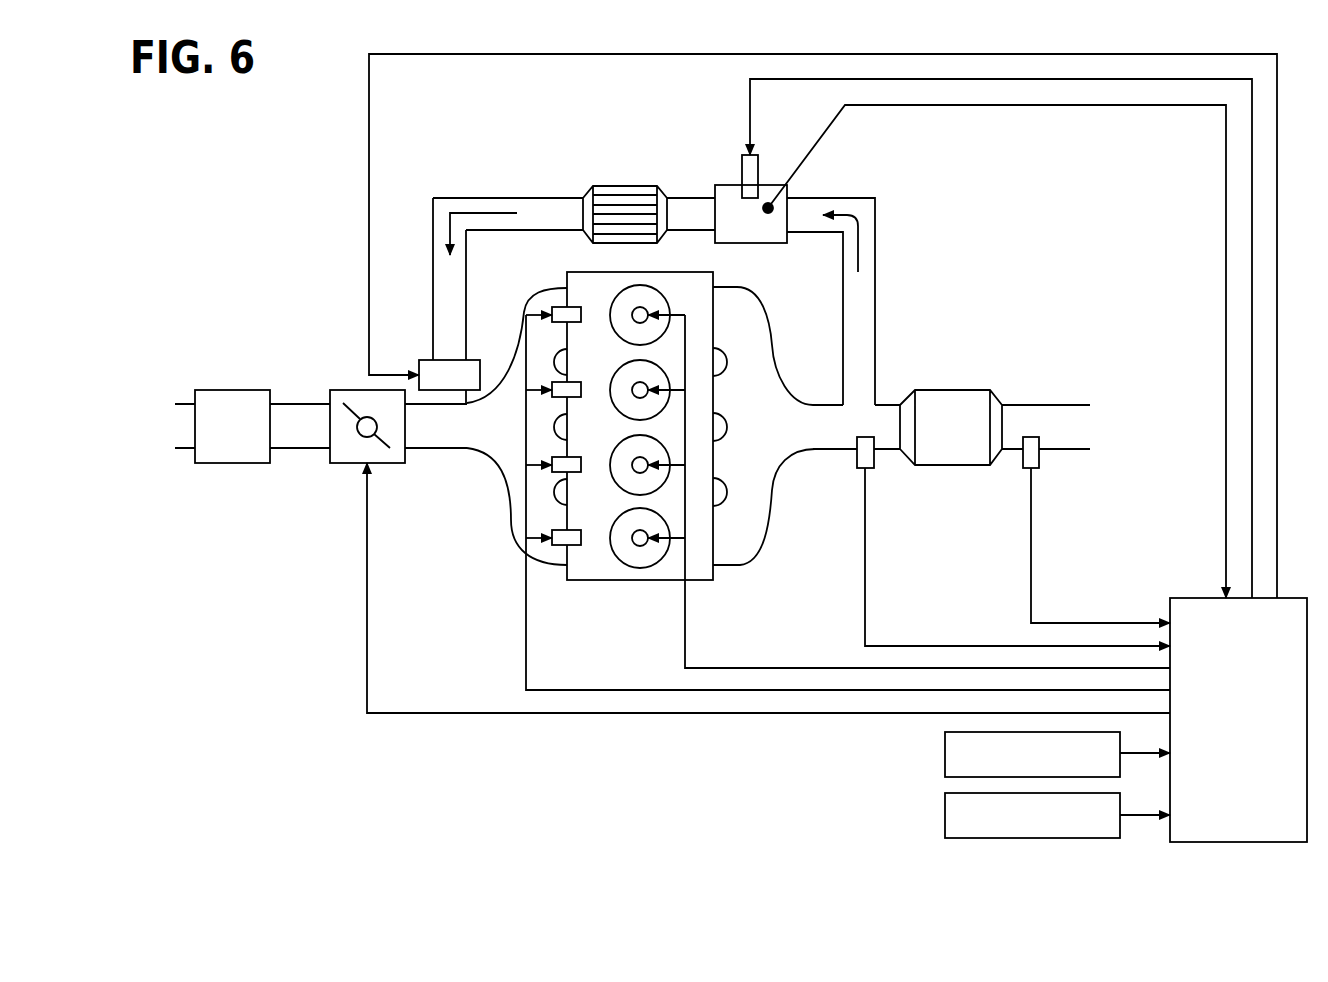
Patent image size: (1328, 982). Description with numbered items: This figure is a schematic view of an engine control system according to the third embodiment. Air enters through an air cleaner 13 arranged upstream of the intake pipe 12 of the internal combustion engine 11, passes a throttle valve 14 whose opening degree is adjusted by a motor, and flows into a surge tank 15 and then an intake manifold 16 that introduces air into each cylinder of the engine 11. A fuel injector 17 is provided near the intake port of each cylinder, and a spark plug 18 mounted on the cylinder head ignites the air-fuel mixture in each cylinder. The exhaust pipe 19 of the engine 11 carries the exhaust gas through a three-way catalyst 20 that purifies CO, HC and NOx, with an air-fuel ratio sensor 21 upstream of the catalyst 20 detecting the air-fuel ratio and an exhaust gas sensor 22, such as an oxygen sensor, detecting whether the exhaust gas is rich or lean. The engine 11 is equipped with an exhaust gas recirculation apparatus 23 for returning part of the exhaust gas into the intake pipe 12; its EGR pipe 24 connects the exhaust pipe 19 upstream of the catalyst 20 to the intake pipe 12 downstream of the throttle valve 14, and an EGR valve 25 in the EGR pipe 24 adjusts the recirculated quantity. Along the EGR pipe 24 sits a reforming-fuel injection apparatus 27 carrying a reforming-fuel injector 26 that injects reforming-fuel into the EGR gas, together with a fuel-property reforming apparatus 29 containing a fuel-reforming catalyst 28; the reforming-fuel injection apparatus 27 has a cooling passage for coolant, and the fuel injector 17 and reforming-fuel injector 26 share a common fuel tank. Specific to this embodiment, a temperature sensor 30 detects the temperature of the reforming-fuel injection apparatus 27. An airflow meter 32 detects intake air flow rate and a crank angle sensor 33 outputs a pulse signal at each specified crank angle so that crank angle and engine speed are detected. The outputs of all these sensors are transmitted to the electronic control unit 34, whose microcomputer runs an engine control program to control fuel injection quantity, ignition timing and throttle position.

The internal combustion engine 11 is at (622, 600).
The intake pipe 12 is at (302, 403).
The air cleaner 13 is at (232, 390).
The throttle valve 14 is at (355, 390).
The surge tank 15 is at (501, 487).
The intake manifold 16 is at (555, 288).
The fuel injector 17 is at (575, 307).
The spark plug 18 is at (648, 306).
The exhaust pipe 19 is at (830, 403).
The three-way catalyst 20 is at (956, 390).
The air-fuel ratio sensor 21 is at (858, 468).
The exhaust gas sensor 22 is at (1040, 468).
The exhaust gas recirculation apparatus 23 is at (426, 282).
The EGR pipe 24 is at (475, 198).
The EGR valve 25 is at (430, 360).
The reforming-fuel injector 26 is at (742, 170).
The reforming-fuel injection apparatus 27 is at (762, 243).
The fuel-reforming catalyst 28 is at (615, 200).
The fuel-property reforming apparatus 29 is at (630, 186).
The temperature sensor 30 is at (794, 178).
The airflow meter 32 is at (945, 750).
The crank angle sensor 33 is at (945, 810).
The electronic control unit 34 is at (1200, 598).